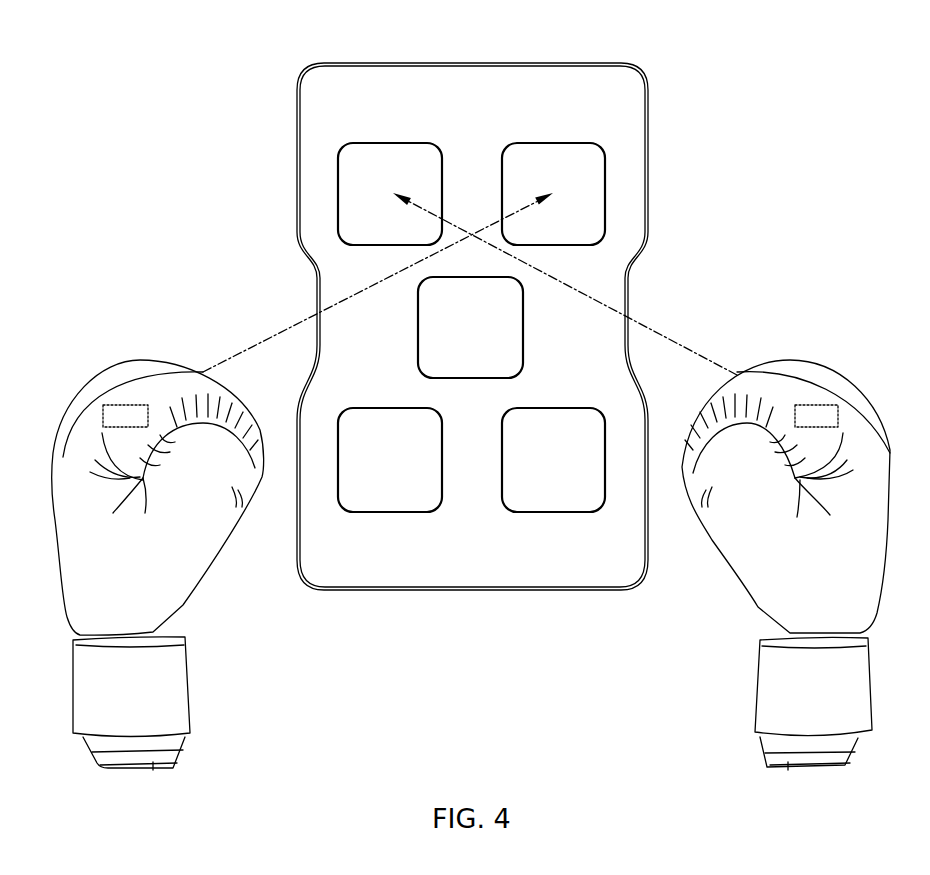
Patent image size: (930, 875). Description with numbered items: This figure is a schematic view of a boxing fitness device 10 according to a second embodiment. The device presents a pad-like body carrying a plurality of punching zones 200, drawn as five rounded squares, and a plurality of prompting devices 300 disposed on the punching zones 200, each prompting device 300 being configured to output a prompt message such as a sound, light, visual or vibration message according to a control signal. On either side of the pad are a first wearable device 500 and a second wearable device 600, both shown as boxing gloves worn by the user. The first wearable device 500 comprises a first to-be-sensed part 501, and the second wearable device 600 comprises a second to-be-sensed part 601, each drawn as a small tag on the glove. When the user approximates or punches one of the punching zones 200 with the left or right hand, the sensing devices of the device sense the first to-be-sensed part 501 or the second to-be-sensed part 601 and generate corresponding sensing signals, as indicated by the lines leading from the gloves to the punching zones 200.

The boxing fitness device 10 is at (293, 68).
The punching zones 200 is at (575, 327).
The prompting devices 300 is at (587, 188).
The first wearable device 500 is at (137, 370).
The first to-be-sensed part 501 is at (107, 413).
The second wearable device 600 is at (812, 368).
The second to-be-sensed part 601 is at (830, 417).